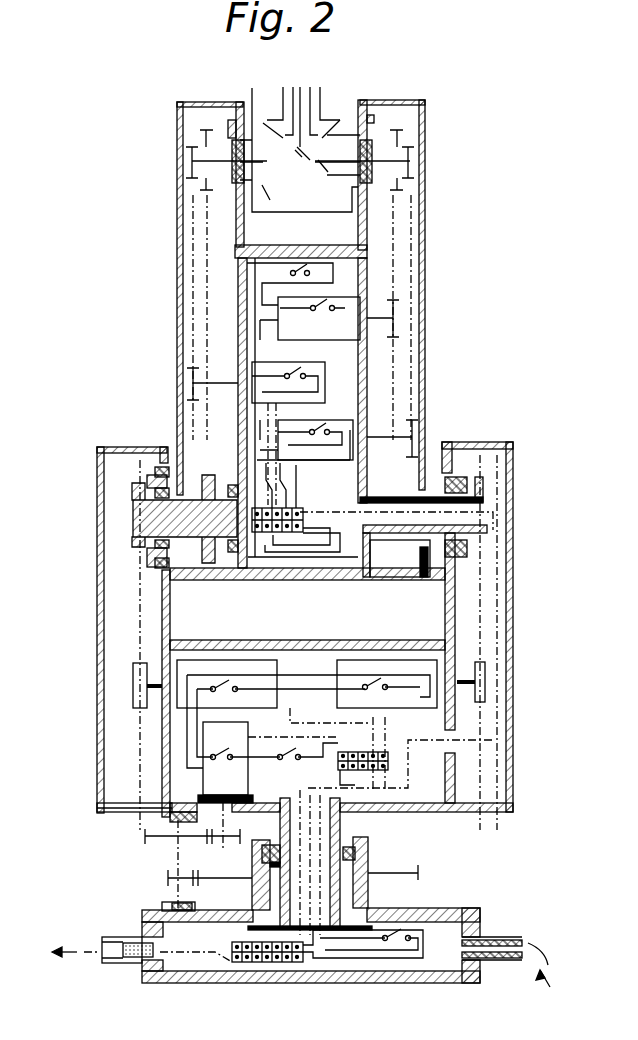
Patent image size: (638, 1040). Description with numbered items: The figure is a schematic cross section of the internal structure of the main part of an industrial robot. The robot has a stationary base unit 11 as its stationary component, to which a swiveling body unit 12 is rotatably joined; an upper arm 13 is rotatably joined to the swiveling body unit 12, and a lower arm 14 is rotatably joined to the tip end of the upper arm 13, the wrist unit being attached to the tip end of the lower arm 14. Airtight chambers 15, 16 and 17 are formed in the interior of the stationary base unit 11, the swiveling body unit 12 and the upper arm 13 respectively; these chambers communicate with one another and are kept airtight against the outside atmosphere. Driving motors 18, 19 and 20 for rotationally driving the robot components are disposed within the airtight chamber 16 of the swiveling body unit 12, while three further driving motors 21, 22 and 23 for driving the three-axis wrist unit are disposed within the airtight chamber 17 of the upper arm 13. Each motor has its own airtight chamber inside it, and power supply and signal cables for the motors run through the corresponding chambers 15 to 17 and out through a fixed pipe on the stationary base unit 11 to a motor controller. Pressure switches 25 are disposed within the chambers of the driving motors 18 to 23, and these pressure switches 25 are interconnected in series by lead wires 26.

The stationary base unit 11 is at (470, 922).
The swiveling body unit 12 is at (450, 808).
The upper arm 13 is at (363, 358).
The lower arm 14 is at (351, 104).
The airtight chamber 15 is at (433, 938).
The airtight chamber 16 is at (450, 747).
The airtight chamber 17 is at (347, 393).
The driving motor 18 is at (210, 782).
The driving motor 19 is at (418, 650).
The driving motor 20 is at (198, 660).
The driving motor 21 is at (327, 377).
The driving motor 22 is at (355, 298).
The driving motor 23 is at (341, 460).
The pressure switch 25 is at (305, 262).
The lead wires 26 is at (322, 660).